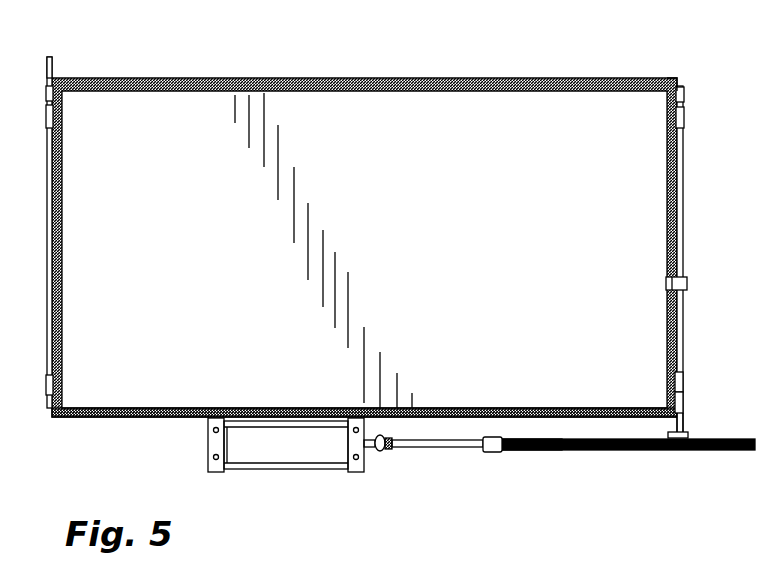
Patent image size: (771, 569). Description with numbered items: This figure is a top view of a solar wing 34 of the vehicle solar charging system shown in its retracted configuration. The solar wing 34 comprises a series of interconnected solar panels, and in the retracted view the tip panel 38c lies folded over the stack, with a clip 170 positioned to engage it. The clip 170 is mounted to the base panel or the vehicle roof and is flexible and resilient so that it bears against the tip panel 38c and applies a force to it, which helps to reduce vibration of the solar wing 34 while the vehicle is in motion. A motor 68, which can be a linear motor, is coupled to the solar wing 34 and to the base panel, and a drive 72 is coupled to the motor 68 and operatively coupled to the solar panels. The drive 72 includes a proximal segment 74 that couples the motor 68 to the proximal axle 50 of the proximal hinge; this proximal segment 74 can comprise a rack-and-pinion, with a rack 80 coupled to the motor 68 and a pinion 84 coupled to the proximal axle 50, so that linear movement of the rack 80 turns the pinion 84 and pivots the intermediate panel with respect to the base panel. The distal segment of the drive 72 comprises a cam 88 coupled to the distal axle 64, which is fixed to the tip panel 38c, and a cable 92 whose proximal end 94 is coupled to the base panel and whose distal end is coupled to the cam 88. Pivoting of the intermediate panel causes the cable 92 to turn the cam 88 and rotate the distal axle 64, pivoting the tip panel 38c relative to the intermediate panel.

The solar wing 34 is at (157, 418).
The tip panel 38c is at (623, 218).
The proximal axle 50 is at (679, 412).
The distal axle 64 is at (53, 54).
The motor 68 is at (290, 453).
The drive 72 is at (468, 450).
The proximal segment 74 is at (543, 450).
The rack 80 is at (620, 452).
The pinion 84 is at (690, 435).
The cam 88 is at (46, 80).
The cable 92 is at (156, 77).
The proximal end 94 is at (666, 77).
The clip 170 is at (678, 283).